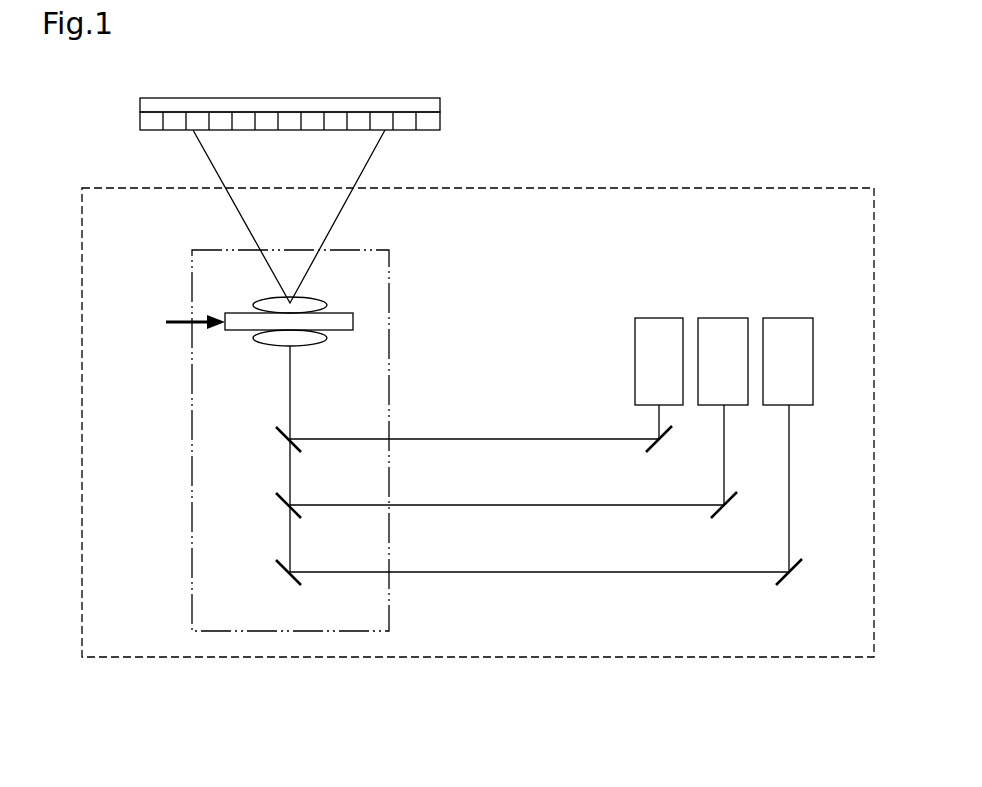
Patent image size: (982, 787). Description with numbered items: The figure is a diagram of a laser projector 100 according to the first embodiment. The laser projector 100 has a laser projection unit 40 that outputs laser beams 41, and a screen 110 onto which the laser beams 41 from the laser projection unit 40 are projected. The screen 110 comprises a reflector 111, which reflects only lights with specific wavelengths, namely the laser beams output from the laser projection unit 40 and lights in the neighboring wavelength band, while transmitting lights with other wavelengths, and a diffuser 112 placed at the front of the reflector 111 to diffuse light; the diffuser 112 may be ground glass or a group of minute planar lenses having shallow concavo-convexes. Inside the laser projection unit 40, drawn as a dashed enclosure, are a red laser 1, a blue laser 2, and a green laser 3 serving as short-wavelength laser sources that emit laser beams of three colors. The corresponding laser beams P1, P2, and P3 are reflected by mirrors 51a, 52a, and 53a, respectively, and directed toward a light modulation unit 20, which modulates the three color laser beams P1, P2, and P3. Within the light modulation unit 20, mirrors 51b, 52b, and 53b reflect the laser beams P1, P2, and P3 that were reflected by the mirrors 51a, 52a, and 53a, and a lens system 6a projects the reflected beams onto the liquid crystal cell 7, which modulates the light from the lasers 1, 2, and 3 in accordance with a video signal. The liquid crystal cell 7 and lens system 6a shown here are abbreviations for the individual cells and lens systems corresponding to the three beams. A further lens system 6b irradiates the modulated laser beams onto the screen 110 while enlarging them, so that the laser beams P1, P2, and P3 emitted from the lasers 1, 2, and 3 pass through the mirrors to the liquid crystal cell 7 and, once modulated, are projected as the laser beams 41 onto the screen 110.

The laser projector 100 is at (696, 91).
The screen 110 is at (365, 106).
The reflector 111 is at (440, 103).
The diffuser 112 is at (440, 125).
The laser beams 41 is at (328, 210).
The laser projection unit 40 is at (645, 657).
The light modulation unit 20 is at (389, 252).
The lens system 6a is at (262, 340).
The lens system 6b is at (322, 302).
The liquid crystal cell 7 is at (353, 321).
The red laser 1 is at (664, 318).
The blue laser 2 is at (729, 318).
The green laser 3 is at (794, 318).
The laser beam P1 is at (520, 438).
The laser beam P2 is at (545, 504).
The laser beam P3 is at (563, 571).
The mirror 51a is at (652, 452).
The mirror 52a is at (717, 518).
The mirror 53a is at (796, 574).
The mirror 51b is at (275, 431).
The mirror 52b is at (275, 497).
The mirror 53b is at (275, 564).